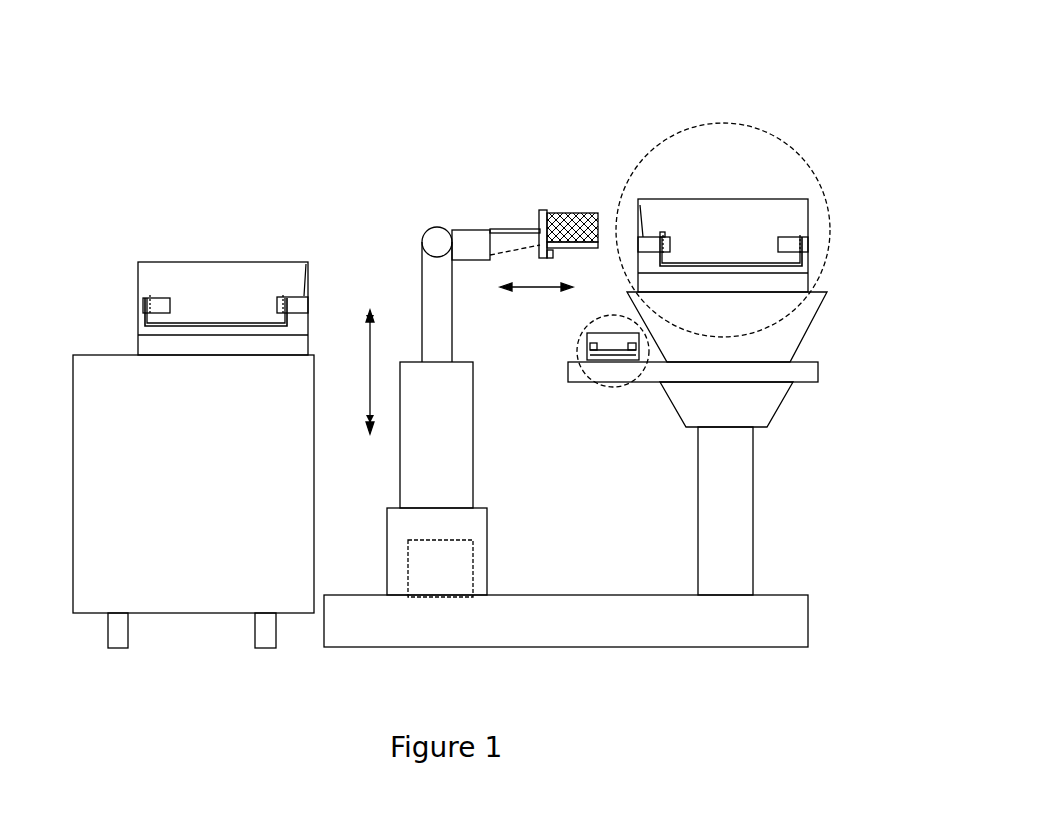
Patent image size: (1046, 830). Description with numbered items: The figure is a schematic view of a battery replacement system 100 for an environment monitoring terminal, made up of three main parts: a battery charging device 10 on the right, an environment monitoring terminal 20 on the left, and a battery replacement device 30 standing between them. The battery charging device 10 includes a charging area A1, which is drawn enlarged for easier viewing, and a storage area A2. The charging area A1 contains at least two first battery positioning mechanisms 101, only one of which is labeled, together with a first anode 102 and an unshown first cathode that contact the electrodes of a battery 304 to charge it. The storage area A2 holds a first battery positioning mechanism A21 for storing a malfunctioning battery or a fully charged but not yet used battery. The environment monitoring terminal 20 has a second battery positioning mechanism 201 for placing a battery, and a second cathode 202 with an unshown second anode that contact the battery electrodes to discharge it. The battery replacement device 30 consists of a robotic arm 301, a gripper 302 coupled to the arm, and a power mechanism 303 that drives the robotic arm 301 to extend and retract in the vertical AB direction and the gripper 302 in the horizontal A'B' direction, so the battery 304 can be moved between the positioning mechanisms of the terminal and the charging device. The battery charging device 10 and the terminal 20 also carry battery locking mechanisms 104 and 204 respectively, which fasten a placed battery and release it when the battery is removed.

The battery replacement system 100 is at (461, 330).
The battery charging device 10 is at (718, 106).
The first battery positioning mechanism 101 is at (700, 268).
The first anode 102 is at (785, 236).
The battery locking mechanism 104 is at (755, 258).
The environment monitoring terminal 20 is at (230, 221).
The second battery positioning mechanism 201 is at (175, 333).
The second cathode 202 is at (160, 298).
The battery locking mechanism 204 is at (246, 323).
The battery replacement device 30 is at (506, 146).
The robotic arm 301 is at (463, 435).
The gripper 302 is at (475, 240).
The power mechanism 303 is at (440, 570).
The battery 304 is at (560, 228).
The charging area A1 is at (790, 148).
The storage area A2 is at (580, 352).
The first battery positioning mechanism A21 is at (610, 357).